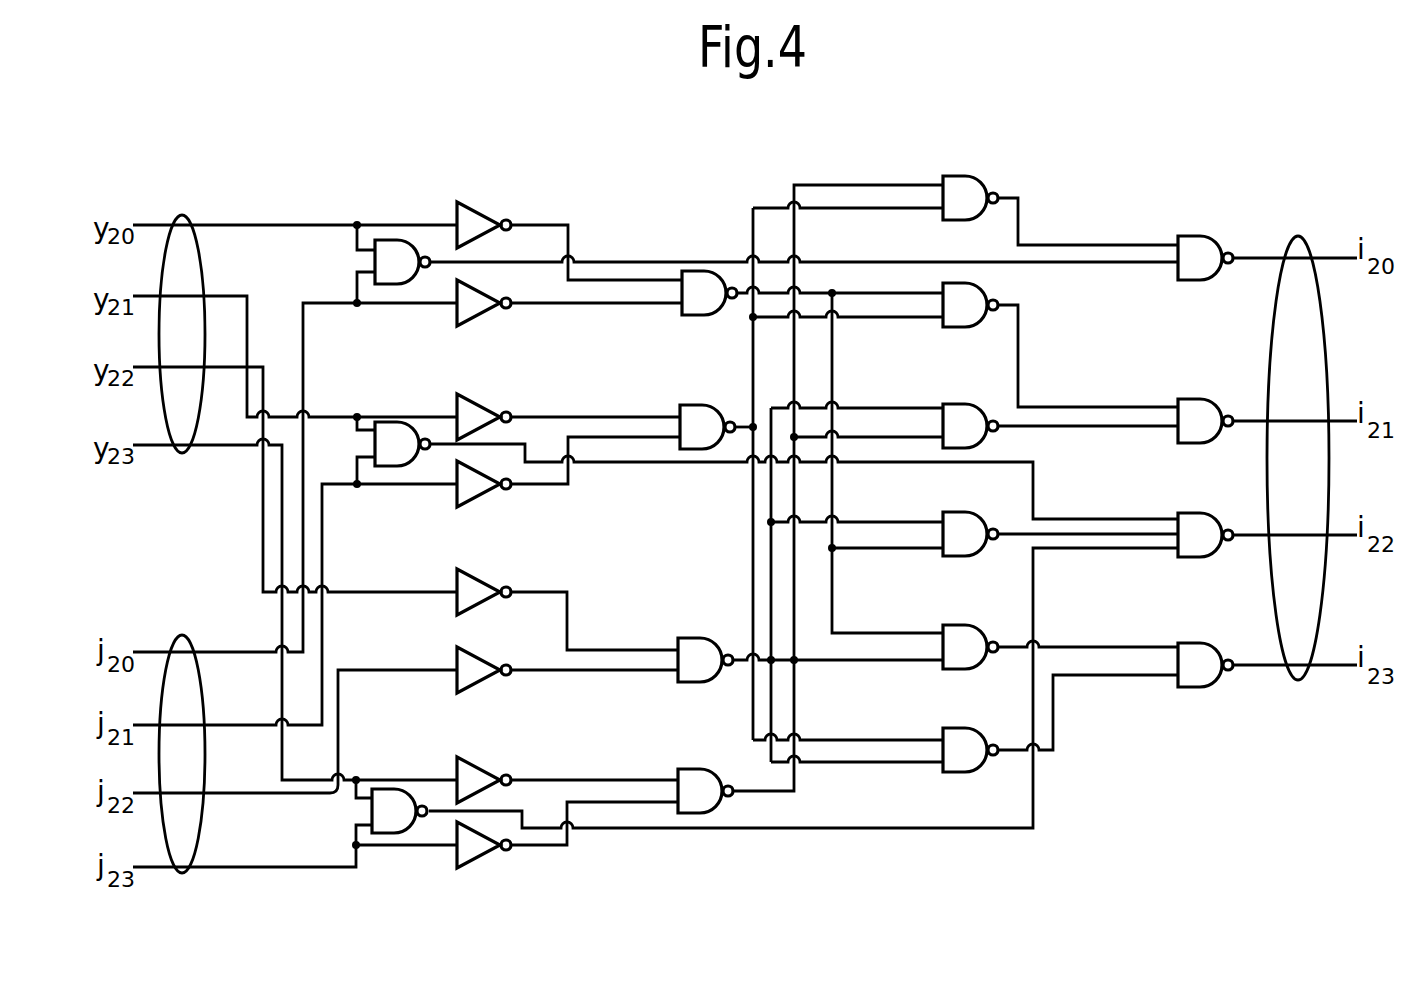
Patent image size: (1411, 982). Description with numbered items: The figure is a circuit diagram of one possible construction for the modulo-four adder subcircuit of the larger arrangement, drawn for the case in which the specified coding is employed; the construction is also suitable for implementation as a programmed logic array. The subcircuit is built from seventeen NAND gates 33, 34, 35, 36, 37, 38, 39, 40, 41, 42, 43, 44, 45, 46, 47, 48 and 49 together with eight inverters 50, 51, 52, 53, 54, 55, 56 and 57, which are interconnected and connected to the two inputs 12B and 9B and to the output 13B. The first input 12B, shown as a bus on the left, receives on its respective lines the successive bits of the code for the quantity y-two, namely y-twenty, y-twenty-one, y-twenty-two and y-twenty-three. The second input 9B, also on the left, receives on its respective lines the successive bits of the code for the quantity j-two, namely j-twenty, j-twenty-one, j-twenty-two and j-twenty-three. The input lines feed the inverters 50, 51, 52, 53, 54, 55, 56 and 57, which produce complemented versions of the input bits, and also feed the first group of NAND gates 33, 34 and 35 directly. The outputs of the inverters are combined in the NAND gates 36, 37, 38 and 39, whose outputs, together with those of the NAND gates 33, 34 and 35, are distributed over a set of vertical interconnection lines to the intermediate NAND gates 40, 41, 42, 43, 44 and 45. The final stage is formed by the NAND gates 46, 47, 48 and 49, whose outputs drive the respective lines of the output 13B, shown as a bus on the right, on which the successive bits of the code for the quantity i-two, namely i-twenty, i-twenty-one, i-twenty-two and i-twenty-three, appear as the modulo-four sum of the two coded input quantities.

The input 12B is at (184, 216).
The input 9B is at (184, 636).
The output 13B is at (1300, 238).
The NAND gate 33 is at (372, 257).
The NAND gate 34 is at (372, 444).
The NAND gate 35 is at (370, 811).
The NAND gate 36 is at (698, 318).
The NAND gate 37 is at (698, 405).
The NAND gate 38 is at (695, 640).
The NAND gate 39 is at (695, 770).
The NAND gate 40 is at (968, 179).
The NAND gate 41 is at (956, 329).
The NAND gate 42 is at (958, 405).
The NAND gate 43 is at (960, 514).
The NAND gate 44 is at (960, 627).
The NAND gate 45 is at (960, 730).
The NAND gate 46 is at (1195, 238).
The NAND gate 47 is at (1190, 401).
The NAND gate 48 is at (1192, 515).
The NAND gate 49 is at (1190, 645).
The inverter 50 is at (480, 217).
The inverter 51 is at (470, 311).
The inverter 52 is at (478, 410).
The inverter 53 is at (470, 492).
The inverter 54 is at (478, 585).
The inverter 55 is at (472, 674).
The inverter 56 is at (477, 772).
The inverter 57 is at (473, 852).